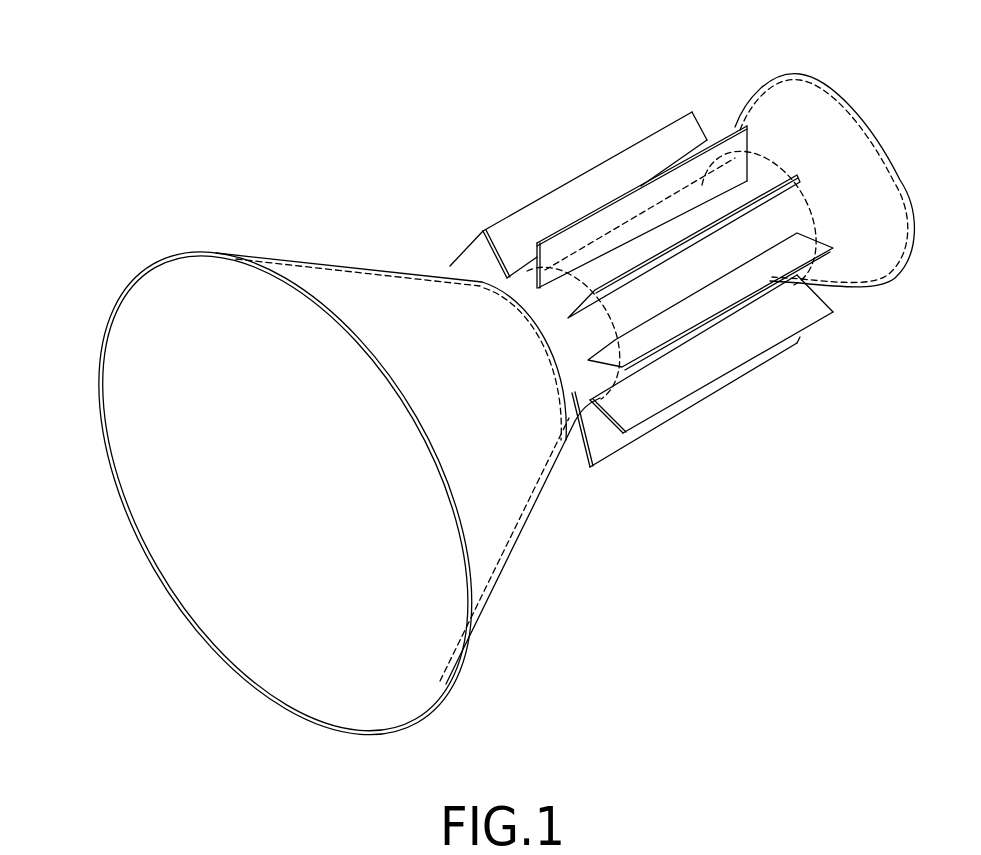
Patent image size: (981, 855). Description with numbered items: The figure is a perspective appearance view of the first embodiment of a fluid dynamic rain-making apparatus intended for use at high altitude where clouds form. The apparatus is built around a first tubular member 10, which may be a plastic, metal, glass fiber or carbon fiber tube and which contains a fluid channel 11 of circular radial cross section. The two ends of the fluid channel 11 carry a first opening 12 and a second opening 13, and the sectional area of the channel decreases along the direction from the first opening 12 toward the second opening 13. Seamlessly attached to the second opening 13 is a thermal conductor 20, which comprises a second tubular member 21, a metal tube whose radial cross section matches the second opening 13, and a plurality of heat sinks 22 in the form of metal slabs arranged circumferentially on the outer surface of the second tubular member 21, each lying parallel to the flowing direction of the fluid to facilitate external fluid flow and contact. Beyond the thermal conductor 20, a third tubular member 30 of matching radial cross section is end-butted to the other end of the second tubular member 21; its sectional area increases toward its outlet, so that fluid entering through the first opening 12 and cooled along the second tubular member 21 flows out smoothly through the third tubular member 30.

The first tubular member 10 is at (366, 270).
The fluid channel 11 is at (265, 640).
The first opening 12 is at (118, 298).
The second opening 13 is at (508, 290).
The thermal conductor 20 is at (688, 518).
The second tubular member 21 is at (590, 412).
The heat sinks 22 is at (652, 403).
The third tubular member 30 is at (747, 105).